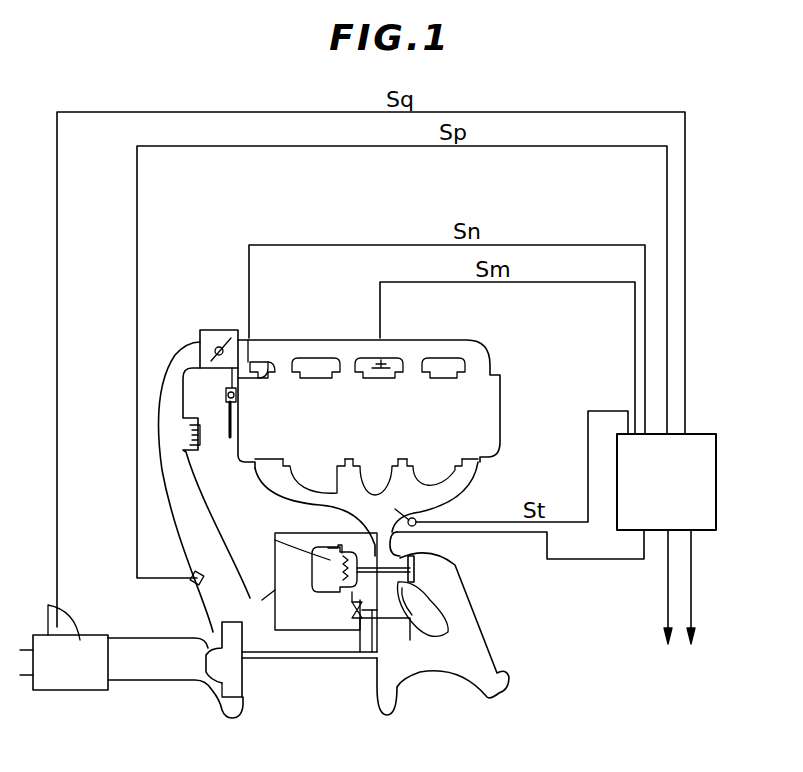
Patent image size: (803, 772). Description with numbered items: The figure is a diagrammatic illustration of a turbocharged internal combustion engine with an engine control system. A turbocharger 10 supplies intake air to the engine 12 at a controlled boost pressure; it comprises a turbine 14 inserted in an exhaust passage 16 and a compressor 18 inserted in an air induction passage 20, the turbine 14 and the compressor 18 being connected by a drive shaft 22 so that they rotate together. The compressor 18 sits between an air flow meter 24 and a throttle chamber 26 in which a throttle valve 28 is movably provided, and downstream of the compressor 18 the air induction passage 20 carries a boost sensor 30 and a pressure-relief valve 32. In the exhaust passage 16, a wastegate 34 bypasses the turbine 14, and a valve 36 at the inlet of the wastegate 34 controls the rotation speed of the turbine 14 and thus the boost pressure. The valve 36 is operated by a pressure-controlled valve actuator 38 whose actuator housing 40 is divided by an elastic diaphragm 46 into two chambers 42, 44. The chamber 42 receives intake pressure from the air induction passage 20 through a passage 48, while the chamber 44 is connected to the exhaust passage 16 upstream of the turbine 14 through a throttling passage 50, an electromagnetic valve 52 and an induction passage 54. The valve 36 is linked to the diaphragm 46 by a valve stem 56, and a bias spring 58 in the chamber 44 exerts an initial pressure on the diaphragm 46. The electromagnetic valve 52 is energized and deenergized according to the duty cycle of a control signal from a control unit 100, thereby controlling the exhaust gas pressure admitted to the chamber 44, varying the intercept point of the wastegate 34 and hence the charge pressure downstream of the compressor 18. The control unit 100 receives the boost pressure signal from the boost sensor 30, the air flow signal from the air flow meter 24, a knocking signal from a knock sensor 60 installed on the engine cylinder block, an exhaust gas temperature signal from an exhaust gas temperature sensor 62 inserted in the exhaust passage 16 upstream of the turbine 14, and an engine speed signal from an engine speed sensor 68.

The turbocharger 10 is at (310, 682).
The engine 12 is at (500, 383).
The turbine 14 is at (405, 672).
The exhaust passage 16 is at (393, 547).
The compressor 18 is at (217, 700).
The air induction passage 20 is at (155, 683).
The drive shaft 22 is at (320, 660).
The air flow meter 24 is at (95, 692).
The throttle chamber 26 is at (200, 336).
The throttle valve 28 is at (222, 345).
The boost sensor 30 is at (196, 585).
The pressure-relief valve 32 is at (200, 443).
The wastegate 34 is at (430, 580).
The valve 36 is at (418, 563).
The pressure-controlled valve actuator 38 is at (285, 542).
The actuator housing 40 is at (302, 548).
The chamber 42 is at (318, 570).
The chamber 44 is at (355, 553).
The elastic diaphragm 46 is at (332, 546).
The passage 48 is at (260, 600).
The throttling passage 50 is at (368, 652).
The electromagnetic valve 52 is at (345, 628).
The induction passage 54 is at (340, 603).
The valve stem 56 is at (402, 598).
The bias spring 58 is at (340, 586).
The knock sensor 60 is at (390, 364).
The exhaust gas temperature sensor 62 is at (416, 519).
The engine speed sensor 68 is at (225, 393).
The control unit 100 is at (700, 434).